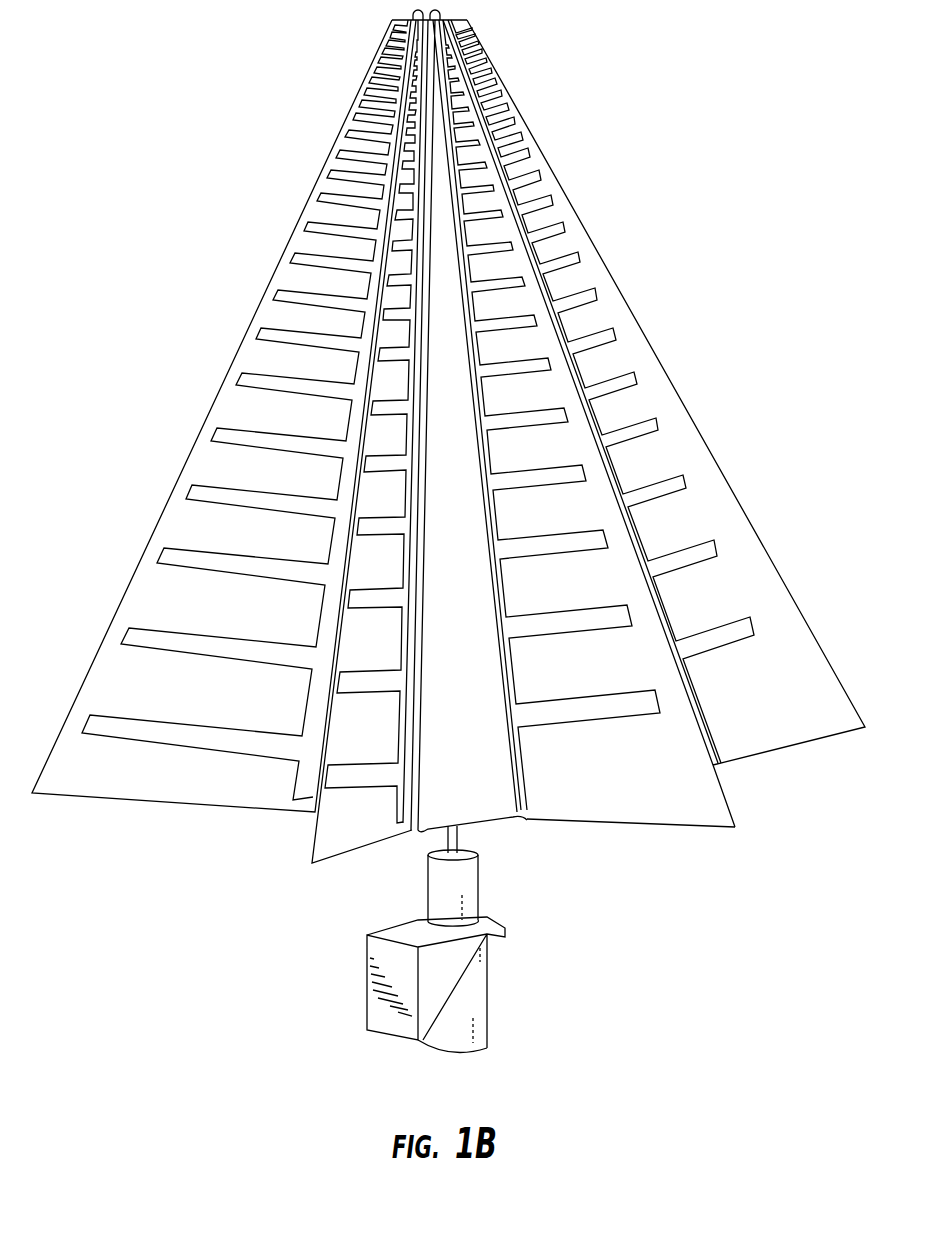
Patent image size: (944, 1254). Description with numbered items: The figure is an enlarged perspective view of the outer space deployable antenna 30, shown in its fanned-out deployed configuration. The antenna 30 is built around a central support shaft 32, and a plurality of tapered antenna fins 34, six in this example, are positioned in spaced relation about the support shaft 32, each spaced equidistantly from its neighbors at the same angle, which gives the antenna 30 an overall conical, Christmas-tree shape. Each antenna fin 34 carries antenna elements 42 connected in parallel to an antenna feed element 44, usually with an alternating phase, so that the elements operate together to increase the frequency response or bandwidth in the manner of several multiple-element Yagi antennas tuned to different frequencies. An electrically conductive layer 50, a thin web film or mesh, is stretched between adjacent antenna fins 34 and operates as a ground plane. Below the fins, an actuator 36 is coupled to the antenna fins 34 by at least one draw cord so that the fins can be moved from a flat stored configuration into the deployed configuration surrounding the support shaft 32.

The outer space deployable antenna 30 is at (448, 464).
The support shaft 32 is at (462, 837).
The antenna fins 34 is at (310, 842).
The actuator 36 is at (490, 990).
The antenna elements 42 is at (218, 432).
The antenna feed element 44 is at (333, 548).
The electrically conductive layer 50 is at (473, 602).